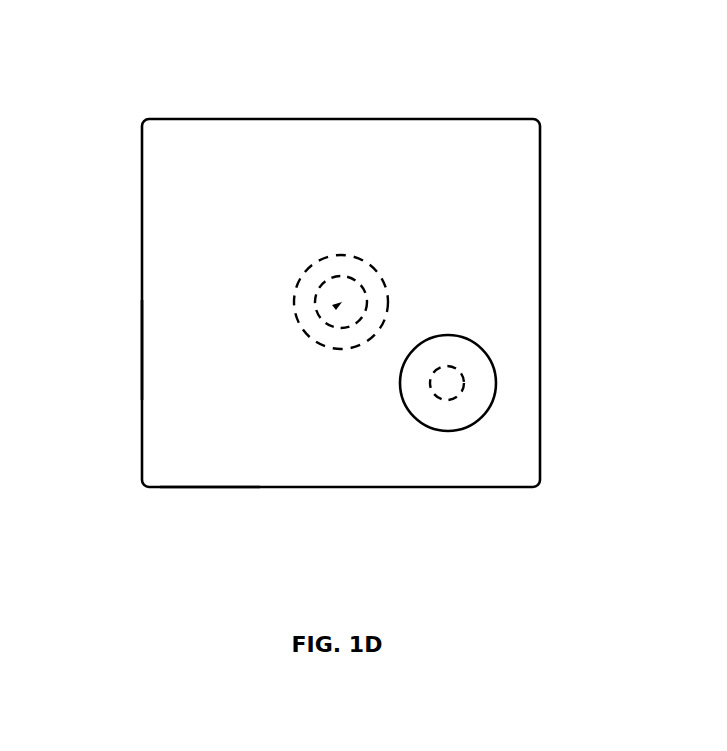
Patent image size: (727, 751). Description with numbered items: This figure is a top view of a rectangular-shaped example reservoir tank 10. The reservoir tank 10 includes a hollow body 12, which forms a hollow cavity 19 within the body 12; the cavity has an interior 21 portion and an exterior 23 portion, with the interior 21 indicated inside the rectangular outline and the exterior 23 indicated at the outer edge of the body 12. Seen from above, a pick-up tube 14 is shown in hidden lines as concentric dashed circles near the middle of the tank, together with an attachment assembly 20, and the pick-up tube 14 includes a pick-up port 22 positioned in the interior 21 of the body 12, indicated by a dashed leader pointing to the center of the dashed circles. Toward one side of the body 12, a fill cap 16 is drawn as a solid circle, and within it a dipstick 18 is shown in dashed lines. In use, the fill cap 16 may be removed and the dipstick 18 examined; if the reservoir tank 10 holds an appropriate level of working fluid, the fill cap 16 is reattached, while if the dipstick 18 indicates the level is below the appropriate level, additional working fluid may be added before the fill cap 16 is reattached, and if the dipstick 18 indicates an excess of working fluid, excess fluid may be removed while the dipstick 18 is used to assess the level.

The reservoir tank 10 is at (335, 507).
The hollow body 12 is at (138, 346).
The pick-up tube 14 is at (325, 257).
The fill cap 16 is at (497, 405).
The dipstick 18 is at (463, 373).
The hollow cavity 19 is at (178, 228).
The attachment assembly 20 is at (360, 260).
The interior 21 is at (248, 467).
The pick-up port 22 is at (333, 309).
The exterior 23 is at (168, 489).